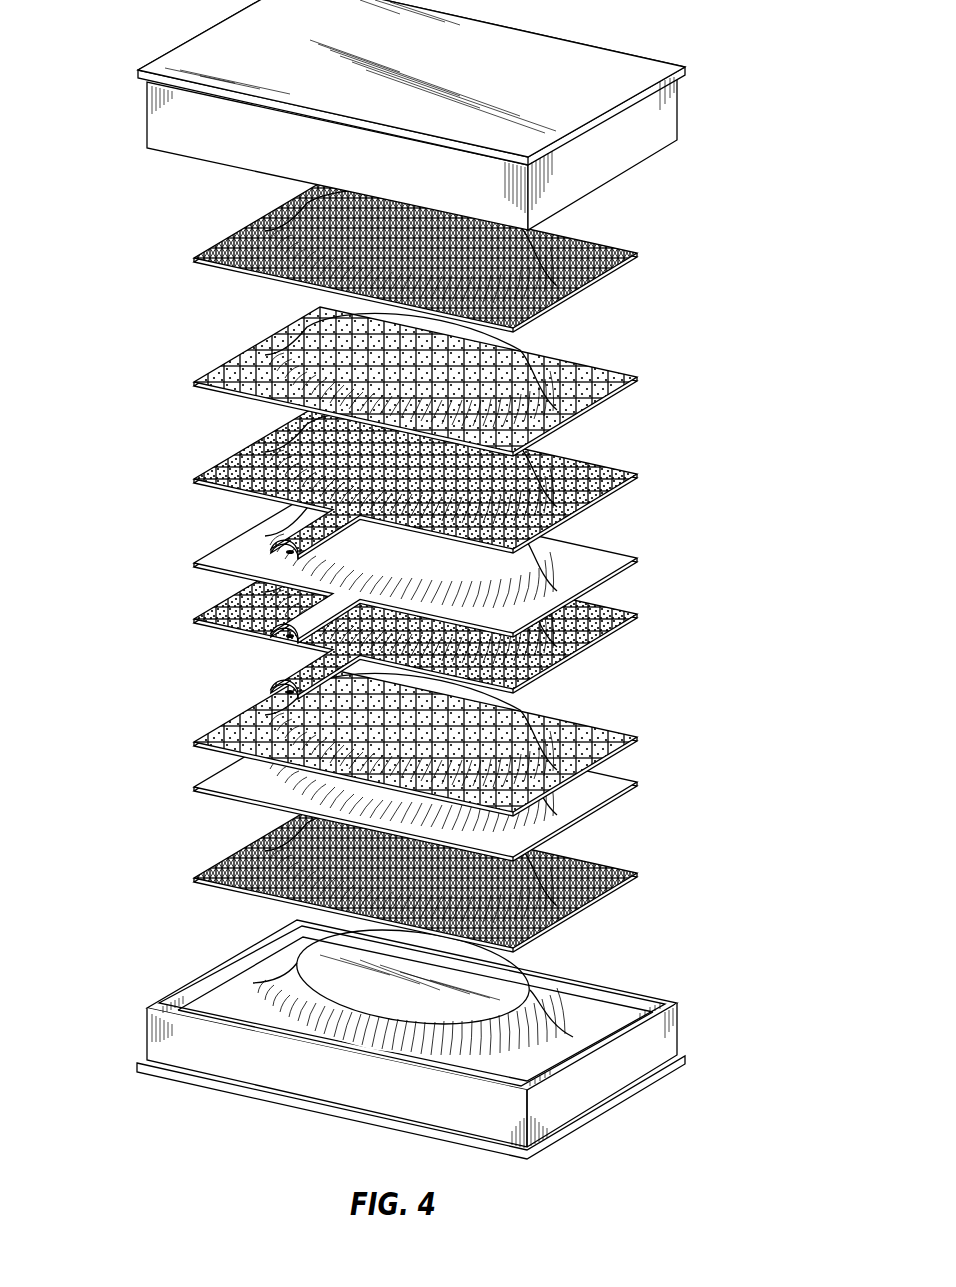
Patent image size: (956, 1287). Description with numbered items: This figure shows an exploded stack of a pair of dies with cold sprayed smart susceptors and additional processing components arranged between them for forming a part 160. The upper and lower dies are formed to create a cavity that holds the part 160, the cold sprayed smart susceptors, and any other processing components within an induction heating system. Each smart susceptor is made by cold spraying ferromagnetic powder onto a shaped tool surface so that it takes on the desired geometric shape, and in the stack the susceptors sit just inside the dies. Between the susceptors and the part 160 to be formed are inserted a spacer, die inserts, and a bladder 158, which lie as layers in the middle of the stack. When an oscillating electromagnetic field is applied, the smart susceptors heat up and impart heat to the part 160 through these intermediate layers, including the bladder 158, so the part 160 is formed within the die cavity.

The part 160 is at (193, 563).
The bladder 158 is at (192, 787).